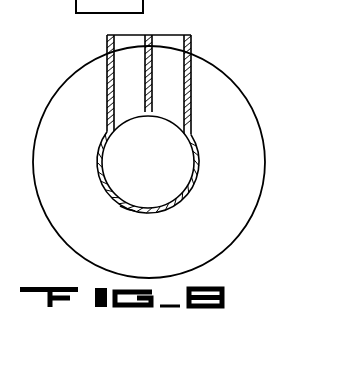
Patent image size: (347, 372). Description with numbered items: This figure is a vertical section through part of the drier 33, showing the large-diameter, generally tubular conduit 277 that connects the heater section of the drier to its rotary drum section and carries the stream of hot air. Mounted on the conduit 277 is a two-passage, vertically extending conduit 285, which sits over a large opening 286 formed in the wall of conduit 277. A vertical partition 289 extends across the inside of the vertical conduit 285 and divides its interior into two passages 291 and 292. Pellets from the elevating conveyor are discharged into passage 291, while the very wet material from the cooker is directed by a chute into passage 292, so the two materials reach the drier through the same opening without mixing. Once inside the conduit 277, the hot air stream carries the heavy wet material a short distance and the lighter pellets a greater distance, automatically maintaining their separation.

The drier 33 is at (233, 84).
The tubular conduit 277 is at (125, 210).
The vertically extending conduit 285 is at (108, 88).
The opening 286 is at (191, 133).
The vertical partition 289 is at (150, 55).
The passage 291 is at (165, 93).
The passage 292 is at (135, 50).